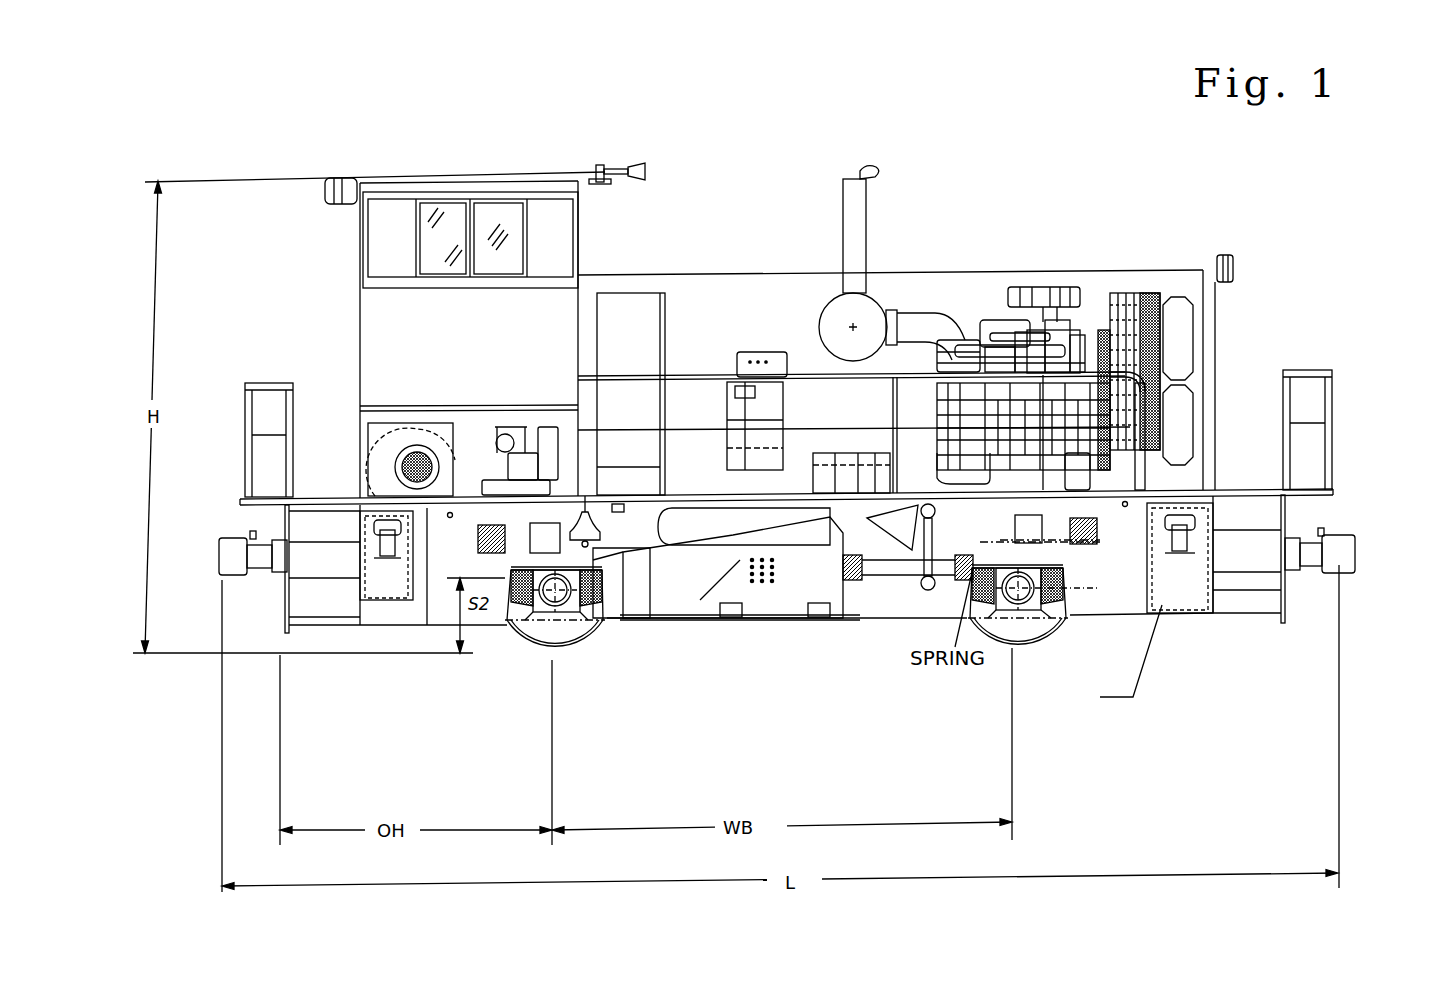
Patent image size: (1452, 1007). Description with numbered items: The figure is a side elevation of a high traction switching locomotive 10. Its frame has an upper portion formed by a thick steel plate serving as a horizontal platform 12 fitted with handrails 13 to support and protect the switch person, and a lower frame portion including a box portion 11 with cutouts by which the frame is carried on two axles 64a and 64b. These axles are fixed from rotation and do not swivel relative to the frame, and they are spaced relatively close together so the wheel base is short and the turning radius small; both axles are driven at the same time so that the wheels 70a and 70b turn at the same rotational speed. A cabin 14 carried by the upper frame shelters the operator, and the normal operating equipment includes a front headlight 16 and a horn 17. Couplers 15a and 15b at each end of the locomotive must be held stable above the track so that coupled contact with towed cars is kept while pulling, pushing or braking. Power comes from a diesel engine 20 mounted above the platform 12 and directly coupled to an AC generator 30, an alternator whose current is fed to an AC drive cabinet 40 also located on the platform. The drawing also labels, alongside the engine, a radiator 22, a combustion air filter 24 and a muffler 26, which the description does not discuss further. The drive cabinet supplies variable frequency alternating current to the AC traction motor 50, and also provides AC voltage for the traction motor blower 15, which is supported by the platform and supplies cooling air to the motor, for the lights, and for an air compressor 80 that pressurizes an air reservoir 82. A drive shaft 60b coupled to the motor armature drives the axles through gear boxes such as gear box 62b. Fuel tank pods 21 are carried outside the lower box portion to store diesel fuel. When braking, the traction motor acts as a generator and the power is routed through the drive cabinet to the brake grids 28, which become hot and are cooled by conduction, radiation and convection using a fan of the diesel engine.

The high traction switching locomotive 10 is at (1190, 668).
The box portion 11 is at (464, 558).
The horizontal platform 12 is at (337, 497).
The handrails 13 is at (268, 383).
The cabin 14 is at (468, 339).
The traction motor blower 15 is at (388, 432).
The coupler 15a is at (217, 547).
The coupler 15b is at (1340, 525).
The front headlight 16 is at (331, 178).
The horn 17 is at (600, 163).
The diesel engine 20 is at (957, 347).
The fuel tank pods 21 is at (640, 603).
The radiator 22 is at (1135, 357).
The combustion air filter 24 is at (1045, 302).
The muffler 26 is at (863, 250).
The brake grids 28 is at (1190, 450).
The AC generator 30 is at (770, 348).
The AC drive cabinet 40 is at (635, 315).
The AC traction motor 50 is at (765, 605).
The drive shaft 60b is at (943, 578).
The gear box 62b is at (1030, 625).
The axle 64a is at (543, 613).
The axle 64b is at (1027, 595).
The wheels 70a is at (508, 640).
The wheels 70b is at (1032, 645).
The air compressor 80 is at (522, 423).
The air reservoir 82 is at (865, 525).